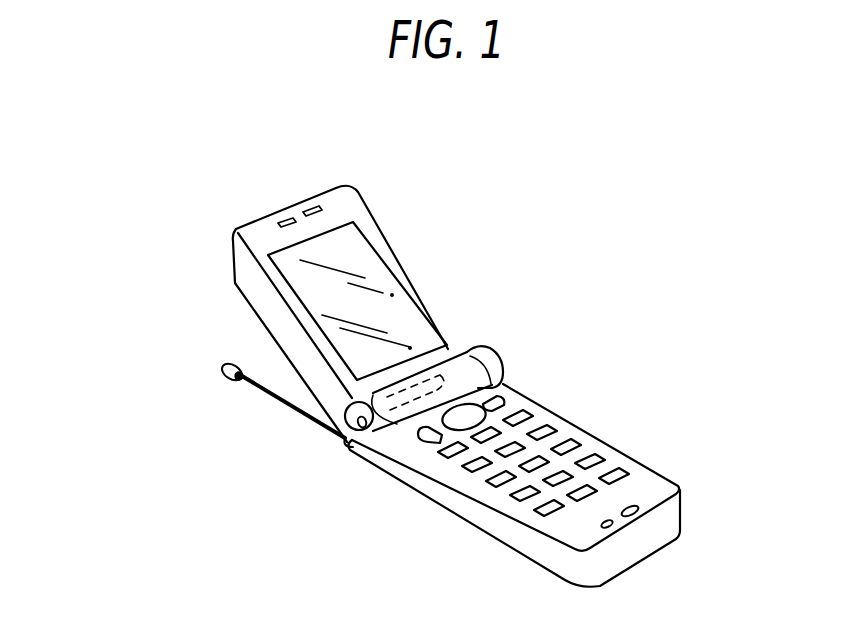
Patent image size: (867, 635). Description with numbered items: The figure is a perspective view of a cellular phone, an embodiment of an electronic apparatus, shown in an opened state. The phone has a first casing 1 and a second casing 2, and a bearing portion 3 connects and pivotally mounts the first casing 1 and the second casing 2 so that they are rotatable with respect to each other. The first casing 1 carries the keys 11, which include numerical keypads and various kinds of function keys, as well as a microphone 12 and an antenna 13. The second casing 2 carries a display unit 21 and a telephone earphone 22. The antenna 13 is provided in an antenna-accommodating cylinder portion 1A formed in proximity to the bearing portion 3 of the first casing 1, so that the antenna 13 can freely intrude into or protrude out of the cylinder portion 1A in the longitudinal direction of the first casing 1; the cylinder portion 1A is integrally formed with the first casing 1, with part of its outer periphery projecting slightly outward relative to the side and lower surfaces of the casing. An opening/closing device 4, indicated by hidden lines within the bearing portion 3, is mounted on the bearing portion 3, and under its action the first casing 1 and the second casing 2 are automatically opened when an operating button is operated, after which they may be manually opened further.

The first casing 1 is at (474, 538).
The cylinder portion 1A is at (353, 447).
The second casing 2 is at (248, 308).
The bearing portion 3 is at (500, 358).
The opening/closing device 4 is at (447, 355).
The key 11 is at (517, 385).
The microphone 12 is at (637, 513).
The antenna 13 is at (283, 407).
The display unit 21 is at (393, 310).
The telephone earphone 22 is at (310, 207).